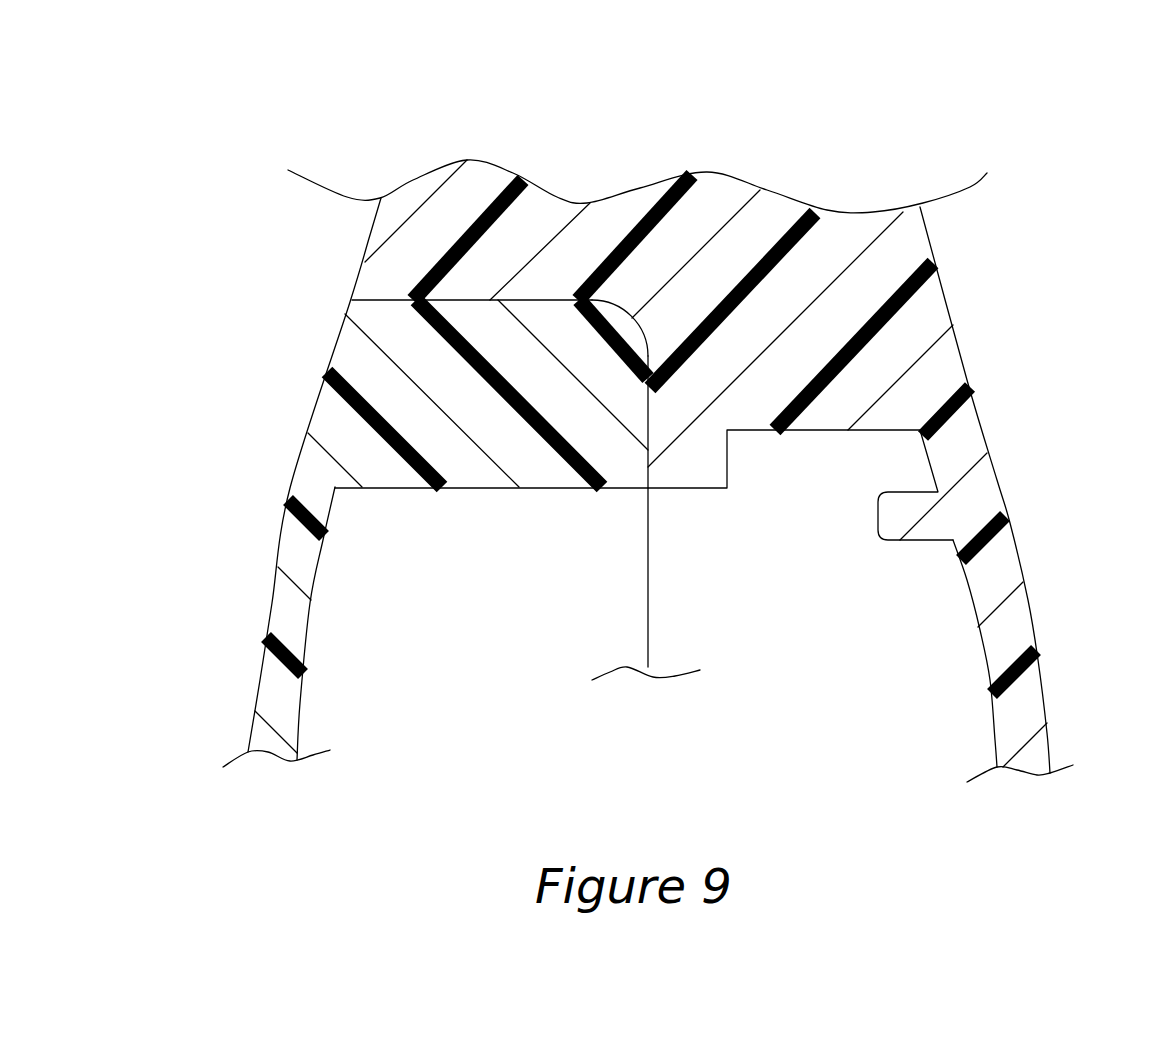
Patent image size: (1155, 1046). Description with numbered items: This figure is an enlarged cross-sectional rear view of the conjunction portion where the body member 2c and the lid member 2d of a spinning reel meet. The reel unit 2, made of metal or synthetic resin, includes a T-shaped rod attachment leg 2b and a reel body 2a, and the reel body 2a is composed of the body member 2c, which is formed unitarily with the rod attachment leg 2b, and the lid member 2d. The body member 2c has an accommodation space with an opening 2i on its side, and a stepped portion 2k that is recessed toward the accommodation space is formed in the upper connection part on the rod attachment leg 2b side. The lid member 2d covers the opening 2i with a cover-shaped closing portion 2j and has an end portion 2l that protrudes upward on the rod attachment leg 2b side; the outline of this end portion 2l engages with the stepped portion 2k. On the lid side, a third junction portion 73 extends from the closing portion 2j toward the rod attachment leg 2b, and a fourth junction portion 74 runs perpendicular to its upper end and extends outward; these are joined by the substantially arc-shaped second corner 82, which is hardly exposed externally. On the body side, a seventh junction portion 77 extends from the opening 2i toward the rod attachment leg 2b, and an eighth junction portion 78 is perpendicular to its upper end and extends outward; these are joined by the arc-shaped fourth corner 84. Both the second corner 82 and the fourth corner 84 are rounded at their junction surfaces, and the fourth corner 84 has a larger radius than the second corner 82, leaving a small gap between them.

The reel unit 2 is at (1055, 475).
The reel body 2a is at (978, 300).
The rod attachment leg 2b is at (705, 203).
The body member 2c is at (933, 368).
The lid member 2d is at (342, 448).
The opening 2i is at (648, 605).
The closing portion 2j is at (648, 554).
The stepped portion 2k is at (523, 210).
The end portion 2l is at (443, 240).
The third junction portion 73 is at (652, 408).
The fourth junction portion 74 is at (452, 357).
The seventh junction portion 77 is at (645, 455).
The eighth junction portion 78 is at (398, 303).
The second corner 82 is at (630, 325).
The fourth corner 84 is at (615, 327).